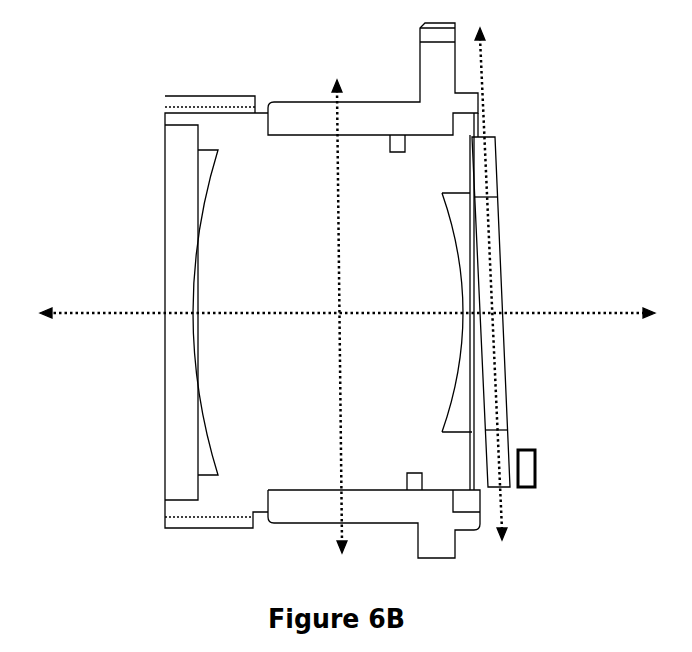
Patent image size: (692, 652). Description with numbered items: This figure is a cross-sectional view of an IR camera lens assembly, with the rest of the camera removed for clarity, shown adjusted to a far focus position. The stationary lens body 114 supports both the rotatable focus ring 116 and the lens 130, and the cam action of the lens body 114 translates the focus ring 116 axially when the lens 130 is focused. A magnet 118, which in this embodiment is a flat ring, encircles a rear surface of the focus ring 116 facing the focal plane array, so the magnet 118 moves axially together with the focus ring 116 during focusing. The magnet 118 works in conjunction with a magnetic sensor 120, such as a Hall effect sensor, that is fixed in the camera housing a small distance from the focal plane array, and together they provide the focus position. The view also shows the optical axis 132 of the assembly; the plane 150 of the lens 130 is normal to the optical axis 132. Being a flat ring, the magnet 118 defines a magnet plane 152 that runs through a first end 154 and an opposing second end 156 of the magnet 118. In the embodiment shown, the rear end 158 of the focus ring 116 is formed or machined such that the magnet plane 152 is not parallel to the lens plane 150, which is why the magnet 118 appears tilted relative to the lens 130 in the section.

The lens body 114 is at (377, 117).
The focus ring 116 is at (192, 107).
The magnet 118 is at (500, 250).
The magnetic sensor 120 is at (536, 463).
The lens 130 is at (297, 263).
The optical axis 132 is at (93, 316).
The lens plane 150 is at (340, 463).
The magnet plane 152 is at (480, 75).
The first end 154 is at (497, 172).
The second end 156 is at (508, 440).
The rear end 158 is at (467, 172).